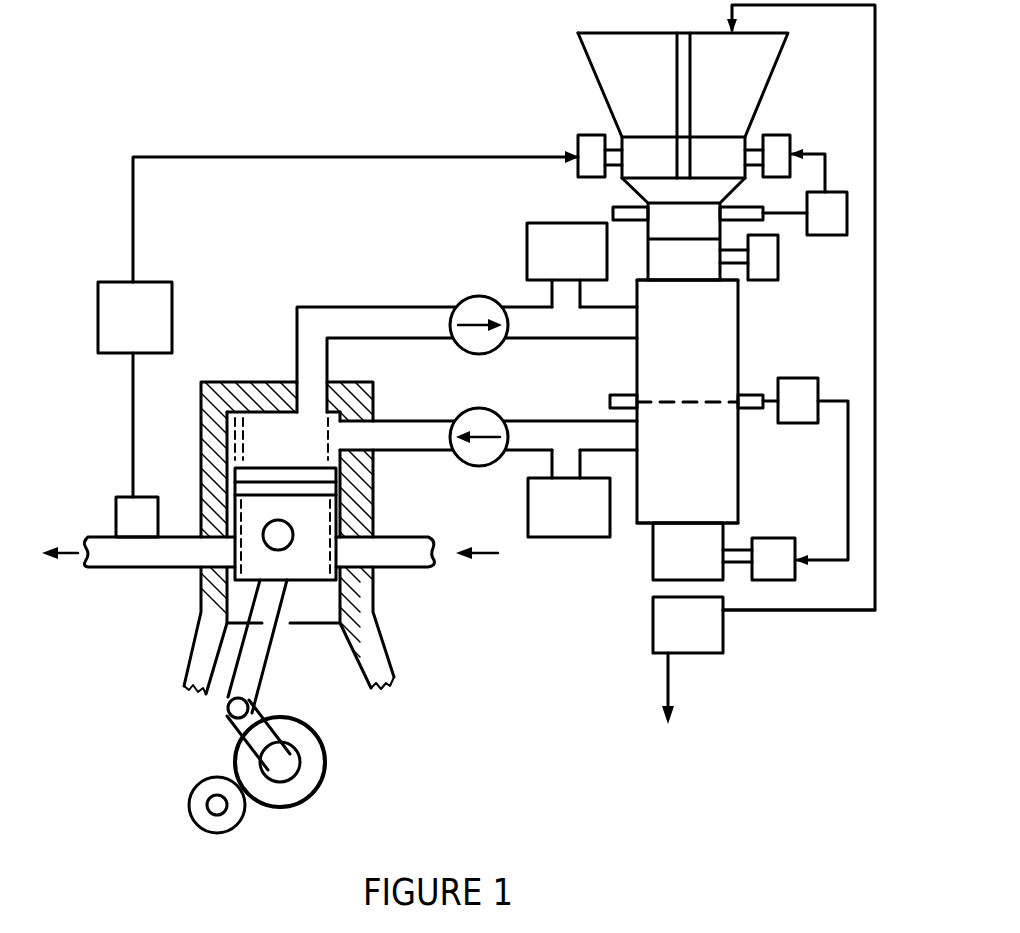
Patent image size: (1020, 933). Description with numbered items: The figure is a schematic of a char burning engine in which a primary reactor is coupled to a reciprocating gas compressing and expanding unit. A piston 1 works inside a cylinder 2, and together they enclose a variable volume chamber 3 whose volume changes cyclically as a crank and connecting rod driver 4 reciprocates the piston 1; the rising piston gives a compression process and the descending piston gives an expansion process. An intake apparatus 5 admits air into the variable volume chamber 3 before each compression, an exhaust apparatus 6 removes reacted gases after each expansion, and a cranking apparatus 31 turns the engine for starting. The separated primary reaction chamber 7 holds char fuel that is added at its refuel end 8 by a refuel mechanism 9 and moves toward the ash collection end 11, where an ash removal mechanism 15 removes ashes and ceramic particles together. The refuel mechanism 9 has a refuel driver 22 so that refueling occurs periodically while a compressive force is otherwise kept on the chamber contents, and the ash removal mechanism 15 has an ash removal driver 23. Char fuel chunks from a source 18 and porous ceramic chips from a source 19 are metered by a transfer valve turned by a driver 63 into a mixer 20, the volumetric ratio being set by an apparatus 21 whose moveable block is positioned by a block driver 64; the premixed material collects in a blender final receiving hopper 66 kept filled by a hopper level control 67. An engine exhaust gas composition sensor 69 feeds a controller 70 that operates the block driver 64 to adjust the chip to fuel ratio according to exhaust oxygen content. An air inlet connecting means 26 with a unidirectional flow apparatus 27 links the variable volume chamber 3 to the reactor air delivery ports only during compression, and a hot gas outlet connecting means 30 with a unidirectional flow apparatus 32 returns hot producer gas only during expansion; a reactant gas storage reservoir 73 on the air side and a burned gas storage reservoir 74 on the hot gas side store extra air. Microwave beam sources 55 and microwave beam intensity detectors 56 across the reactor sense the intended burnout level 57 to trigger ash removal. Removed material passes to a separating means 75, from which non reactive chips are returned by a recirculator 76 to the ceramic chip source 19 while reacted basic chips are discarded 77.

The piston 1 is at (245, 570).
The cylinder 2 is at (203, 618).
The variable volume chamber 3 is at (262, 435).
The driver 4 is at (260, 737).
The intake apparatus 5 is at (400, 553).
The exhaust apparatus 6 is at (130, 553).
The primary reaction chamber 7 is at (707, 470).
The refuel end 8 is at (705, 300).
The refuel mechanism 9 is at (705, 288).
The ash collection end 11 is at (692, 515).
The ash removal mechanism 15 is at (672, 553).
The source of char fuel chunks 18 is at (618, 62).
The source of porous ceramic chips 19 is at (750, 63).
The mixer 20 is at (717, 188).
The apparatus for setting the volumetric ratio 21 is at (648, 143).
The refuel driver 22 is at (760, 263).
The ash removal driver 23 is at (772, 553).
The air inlet connecting means 26 is at (560, 318).
The unidirectional flow apparatus 27 is at (475, 337).
The hot gas outlet connecting means 30 is at (530, 438).
The cranking apparatus 31 is at (205, 815).
The unidirectional flow apparatus 32 is at (483, 457).
The microwave beam sources 55 is at (615, 403).
The microwave beam intensity detectors 56 is at (797, 402).
The intended burnout level 57 is at (693, 410).
The driver 63 is at (772, 148).
The block driver 64 is at (600, 167).
The blender final receiving hopper 66 is at (667, 222).
The hopper level control 67 is at (827, 213).
The engine exhaust gas composition sensor 69 is at (148, 505).
The controller 70 is at (142, 300).
The reactant gas storage reservoir 73 is at (548, 250).
The burned gas storage reservoir 74 is at (553, 512).
The separating means 75 is at (675, 633).
The recirculator 76 is at (810, 613).
The discard 77 is at (672, 682).